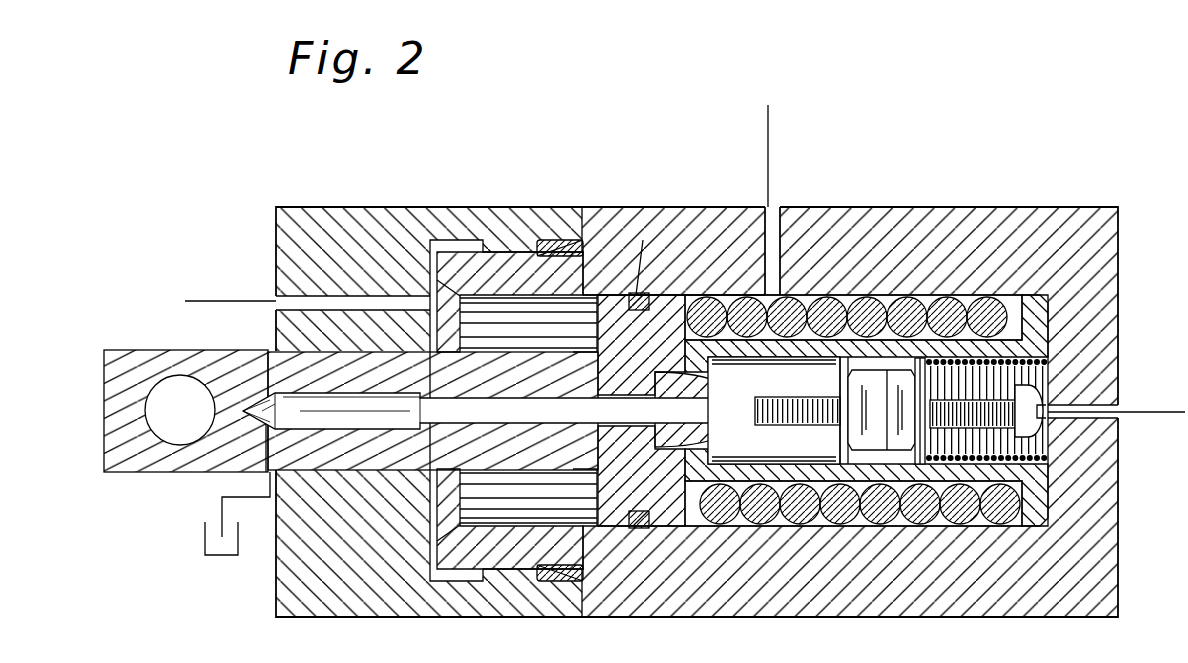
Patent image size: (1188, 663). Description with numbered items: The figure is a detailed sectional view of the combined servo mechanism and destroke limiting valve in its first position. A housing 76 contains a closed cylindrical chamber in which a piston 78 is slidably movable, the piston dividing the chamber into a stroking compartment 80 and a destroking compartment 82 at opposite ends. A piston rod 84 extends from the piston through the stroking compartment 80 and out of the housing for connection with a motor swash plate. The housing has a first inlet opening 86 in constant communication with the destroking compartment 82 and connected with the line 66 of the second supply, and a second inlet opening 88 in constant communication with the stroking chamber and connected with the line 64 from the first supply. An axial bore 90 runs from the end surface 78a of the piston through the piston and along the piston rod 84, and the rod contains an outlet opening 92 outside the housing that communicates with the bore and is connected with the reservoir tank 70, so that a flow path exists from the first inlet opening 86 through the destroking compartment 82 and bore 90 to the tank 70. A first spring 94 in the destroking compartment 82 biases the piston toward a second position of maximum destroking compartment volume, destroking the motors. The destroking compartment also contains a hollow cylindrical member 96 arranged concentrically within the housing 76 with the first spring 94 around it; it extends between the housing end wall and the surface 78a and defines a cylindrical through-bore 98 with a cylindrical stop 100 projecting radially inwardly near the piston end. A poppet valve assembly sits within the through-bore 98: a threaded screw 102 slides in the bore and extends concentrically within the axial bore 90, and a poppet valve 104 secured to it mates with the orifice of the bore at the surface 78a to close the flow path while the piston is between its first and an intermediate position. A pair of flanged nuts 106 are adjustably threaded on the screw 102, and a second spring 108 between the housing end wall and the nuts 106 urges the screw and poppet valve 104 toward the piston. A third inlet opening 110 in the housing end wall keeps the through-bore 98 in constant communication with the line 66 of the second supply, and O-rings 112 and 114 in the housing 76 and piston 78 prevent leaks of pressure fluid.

The line 64 is at (212, 300).
The line 66 is at (771, 150).
The reservoir tank 70 is at (205, 538).
The housing 76 is at (1118, 592).
The piston 78 is at (596, 486).
The end surface 78a is at (692, 283).
The stroking compartment 80 is at (508, 525).
The destroking compartment 82 is at (907, 527).
The piston rod 84 is at (125, 458).
The first inlet opening 86 is at (773, 209).
The second inlet opening 88 is at (280, 305).
The axial bore 90 is at (390, 430).
The outlet opening 92 is at (273, 440).
The first spring 94 is at (905, 296).
The hollow cylindrical member 96 is at (775, 523).
The cylindrical through-bore 98 is at (1049, 440).
The cylindrical stop 100 is at (682, 370).
The threaded screw 102 is at (798, 425).
The poppet valve 104 is at (665, 433).
The flanged nuts 106 is at (846, 381).
The second spring 108 is at (1035, 466).
The third inlet opening 110 is at (1078, 404).
The O-ring 112 is at (560, 239).
The O-ring 114 is at (640, 292).